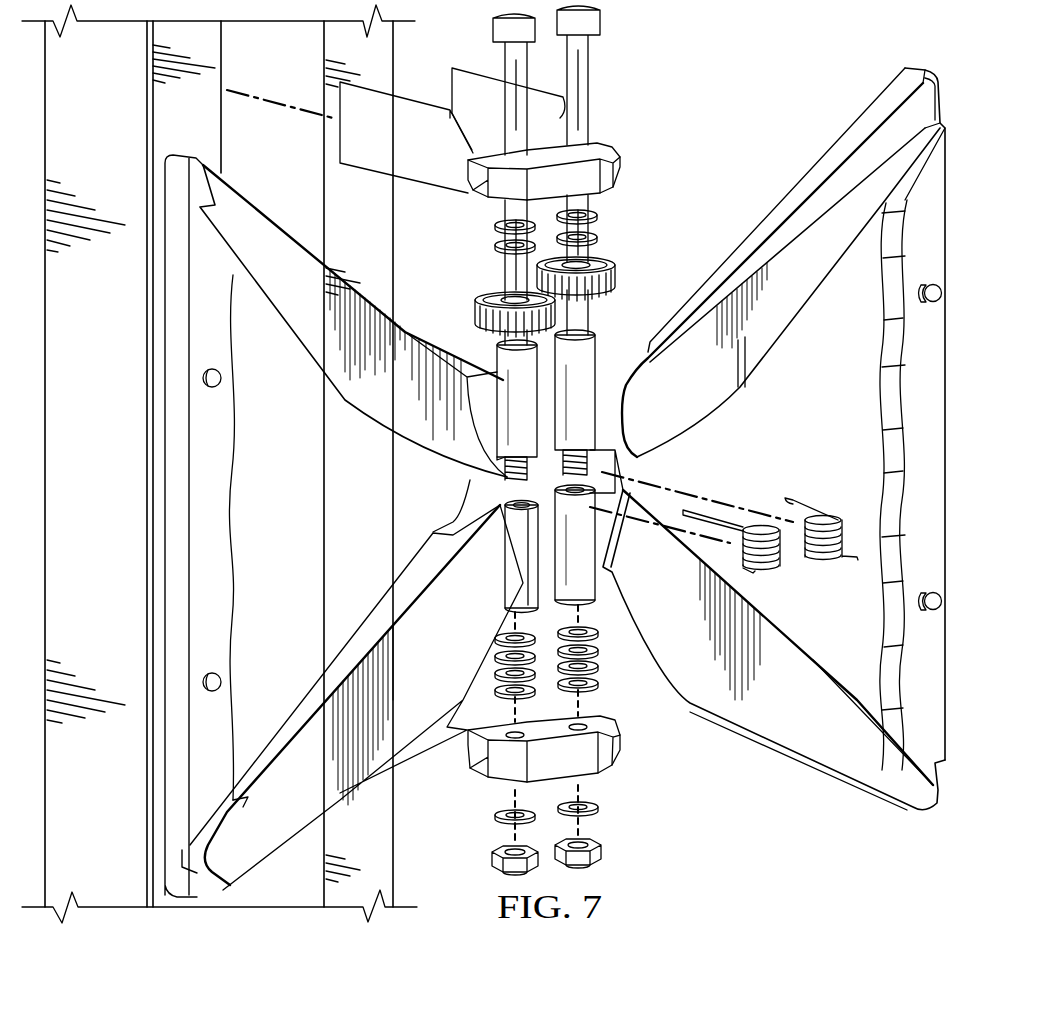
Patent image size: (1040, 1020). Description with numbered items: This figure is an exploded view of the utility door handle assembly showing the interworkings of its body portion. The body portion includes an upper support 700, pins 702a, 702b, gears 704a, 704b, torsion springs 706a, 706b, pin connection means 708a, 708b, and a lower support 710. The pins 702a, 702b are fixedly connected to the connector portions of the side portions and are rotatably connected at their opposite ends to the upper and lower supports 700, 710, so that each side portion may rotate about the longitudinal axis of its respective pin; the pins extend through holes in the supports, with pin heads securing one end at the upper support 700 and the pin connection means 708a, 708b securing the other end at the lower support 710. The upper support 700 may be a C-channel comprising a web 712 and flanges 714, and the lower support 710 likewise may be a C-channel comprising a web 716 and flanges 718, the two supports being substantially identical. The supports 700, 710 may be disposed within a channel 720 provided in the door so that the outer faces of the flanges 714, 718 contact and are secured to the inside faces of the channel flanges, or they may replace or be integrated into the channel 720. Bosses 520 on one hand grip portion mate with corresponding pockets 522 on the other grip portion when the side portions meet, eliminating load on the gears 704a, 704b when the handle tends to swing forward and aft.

The upper support 700 is at (417, 98).
The pin 702a is at (530, 57).
The pin 702b is at (600, 26).
The gear 704a is at (480, 298).
The gear 704b is at (642, 238).
The torsion spring 706a is at (742, 547).
The torsion spring 706b is at (820, 559).
The pin connection means 708a is at (480, 827).
The pin connection means 708b is at (615, 827).
The lower support 710 is at (458, 773).
The web 712 is at (437, 187).
The flanges 714 is at (347, 140).
The web 716 is at (593, 777).
The flanges 718 is at (450, 745).
The channel 720 is at (290, 63).
The bosses 520 is at (942, 294).
The pockets 522 is at (221, 380).